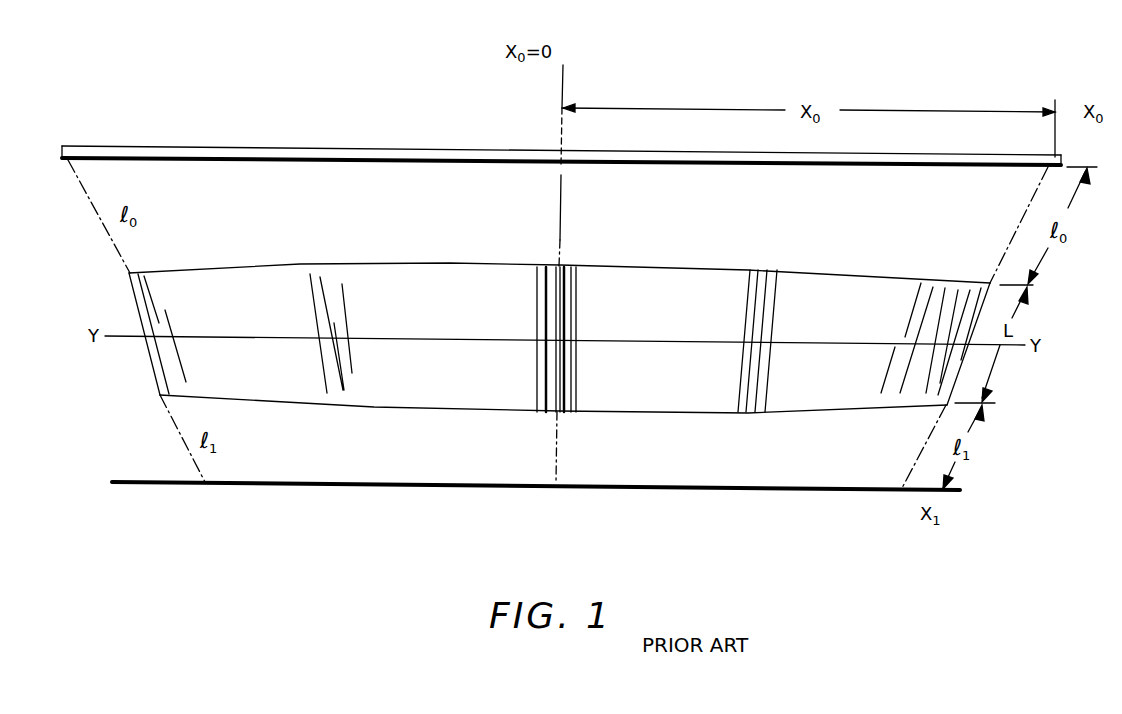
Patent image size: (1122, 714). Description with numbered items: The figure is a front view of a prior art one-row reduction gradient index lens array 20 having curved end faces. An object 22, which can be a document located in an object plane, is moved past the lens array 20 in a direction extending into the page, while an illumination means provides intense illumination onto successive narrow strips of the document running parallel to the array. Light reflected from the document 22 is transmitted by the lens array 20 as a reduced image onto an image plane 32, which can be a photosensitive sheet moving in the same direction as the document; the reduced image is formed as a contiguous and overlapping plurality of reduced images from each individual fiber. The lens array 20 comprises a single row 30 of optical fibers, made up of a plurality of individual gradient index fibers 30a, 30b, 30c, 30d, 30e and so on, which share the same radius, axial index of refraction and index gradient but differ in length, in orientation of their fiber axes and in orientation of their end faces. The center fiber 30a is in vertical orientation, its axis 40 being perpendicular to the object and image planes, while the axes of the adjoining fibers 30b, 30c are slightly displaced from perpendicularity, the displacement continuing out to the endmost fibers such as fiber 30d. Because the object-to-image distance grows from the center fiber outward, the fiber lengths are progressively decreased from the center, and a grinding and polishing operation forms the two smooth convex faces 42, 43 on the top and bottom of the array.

The lens array 20 is at (559, 345).
The object 22 is at (372, 155).
The single row of optical fibers 30 is at (559, 273).
The center fiber 30a is at (553, 313).
The adjoining fiber 30b is at (573, 320).
The adjoining fiber 30c is at (545, 370).
The endmost fiber 30d is at (980, 308).
The gradient index fiber 30e is at (143, 308).
The image plane 32 is at (768, 491).
The axis 40 is at (559, 273).
The convex face 42 is at (706, 266).
The convex face 43 is at (713, 414).